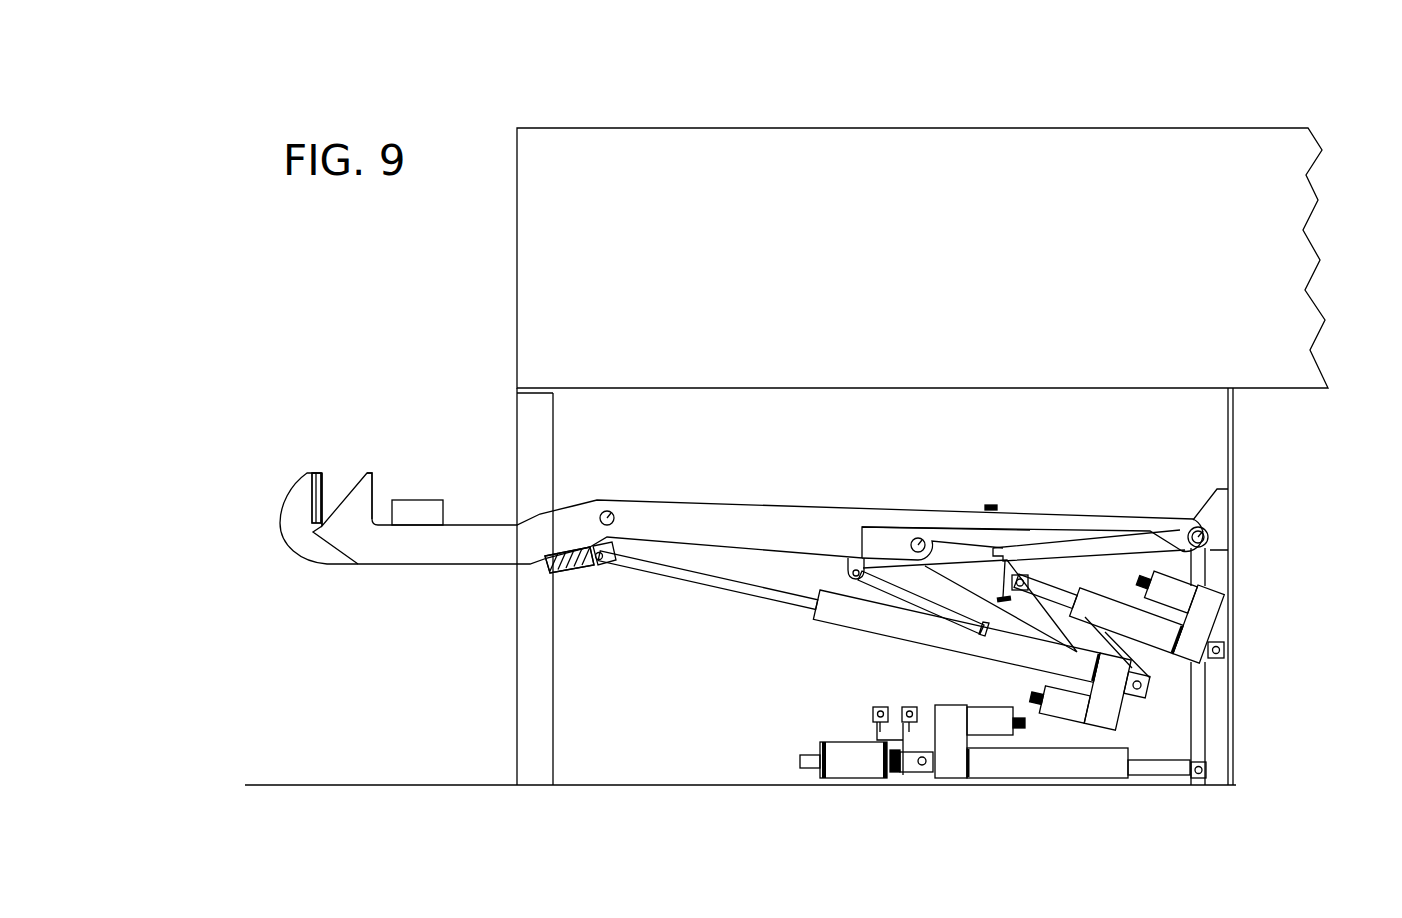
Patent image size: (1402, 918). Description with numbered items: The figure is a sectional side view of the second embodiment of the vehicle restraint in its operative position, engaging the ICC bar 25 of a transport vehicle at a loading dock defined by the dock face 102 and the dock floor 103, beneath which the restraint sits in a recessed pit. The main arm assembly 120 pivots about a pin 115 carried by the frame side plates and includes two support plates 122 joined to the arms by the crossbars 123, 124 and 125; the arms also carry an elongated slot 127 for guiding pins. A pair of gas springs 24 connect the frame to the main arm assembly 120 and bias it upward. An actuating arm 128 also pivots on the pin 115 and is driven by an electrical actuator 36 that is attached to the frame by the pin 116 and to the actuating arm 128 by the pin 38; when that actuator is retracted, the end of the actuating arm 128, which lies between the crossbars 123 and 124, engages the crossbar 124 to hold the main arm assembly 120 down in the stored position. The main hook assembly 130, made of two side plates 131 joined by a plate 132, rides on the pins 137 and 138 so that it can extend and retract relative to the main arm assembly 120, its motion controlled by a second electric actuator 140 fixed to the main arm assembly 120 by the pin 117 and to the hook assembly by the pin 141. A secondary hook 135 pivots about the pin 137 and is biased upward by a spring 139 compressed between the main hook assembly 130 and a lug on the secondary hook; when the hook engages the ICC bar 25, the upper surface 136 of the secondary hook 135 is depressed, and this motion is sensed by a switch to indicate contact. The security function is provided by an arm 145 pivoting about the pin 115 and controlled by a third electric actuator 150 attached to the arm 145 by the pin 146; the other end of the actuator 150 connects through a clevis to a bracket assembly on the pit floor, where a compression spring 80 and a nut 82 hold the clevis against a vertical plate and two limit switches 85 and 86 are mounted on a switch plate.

The gas springs 24 is at (905, 593).
The ICC bar 25 is at (415, 500).
The electrical actuator 36 is at (1228, 618).
The pin 38 is at (1040, 567).
The compression spring 80 is at (835, 742).
The nut 82 is at (894, 780).
The limit switch 85 is at (873, 713).
The limit switch 86 is at (905, 706).
The dock face 102 is at (515, 275).
The dock floor 103 is at (890, 128).
The pin 115 is at (1210, 537).
The pin 116 is at (1228, 650).
The pin 117 is at (1142, 696).
The main arm assembly 120 is at (805, 502).
The support plates 122 is at (968, 585).
The crossbar 123 is at (995, 507).
The crossbar 124 is at (1008, 575).
The crossbar 125 is at (1155, 683).
The elongated slot 127 is at (1100, 520).
The actuating arm 128 is at (1160, 515).
The main hook assembly 130 is at (312, 470).
The side plates 131 is at (312, 470).
The plate 132 is at (322, 495).
The secondary hook 135 is at (372, 493).
The upper surface 136 is at (457, 524).
The pin 137 is at (610, 512).
The pin 138 is at (918, 538).
The spring 139 is at (570, 576).
The second electric actuator 140 is at (975, 658).
The pin 141 is at (600, 562).
The arm 145 is at (1206, 737).
The pin 146 is at (1207, 775).
The third electric actuator 150 is at (1035, 778).